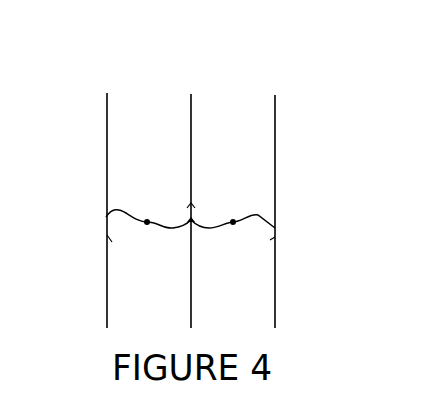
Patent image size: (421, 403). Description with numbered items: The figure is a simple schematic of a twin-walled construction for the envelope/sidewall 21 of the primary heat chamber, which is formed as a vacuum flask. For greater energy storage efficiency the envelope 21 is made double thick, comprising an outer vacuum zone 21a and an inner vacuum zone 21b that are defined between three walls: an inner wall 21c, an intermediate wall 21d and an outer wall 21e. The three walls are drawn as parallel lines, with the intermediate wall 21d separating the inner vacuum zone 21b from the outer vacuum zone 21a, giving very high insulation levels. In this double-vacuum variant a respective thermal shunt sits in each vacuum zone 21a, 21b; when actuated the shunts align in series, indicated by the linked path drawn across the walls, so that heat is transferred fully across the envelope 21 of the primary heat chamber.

The envelope/sidewall 21 is at (95, 163).
The outer vacuum zone 21a is at (155, 127).
The inner vacuum zone 21b is at (248, 121).
The inner wall 21c is at (276, 147).
The intermediate wall 21d is at (193, 123).
The outer wall 21e is at (107, 113).